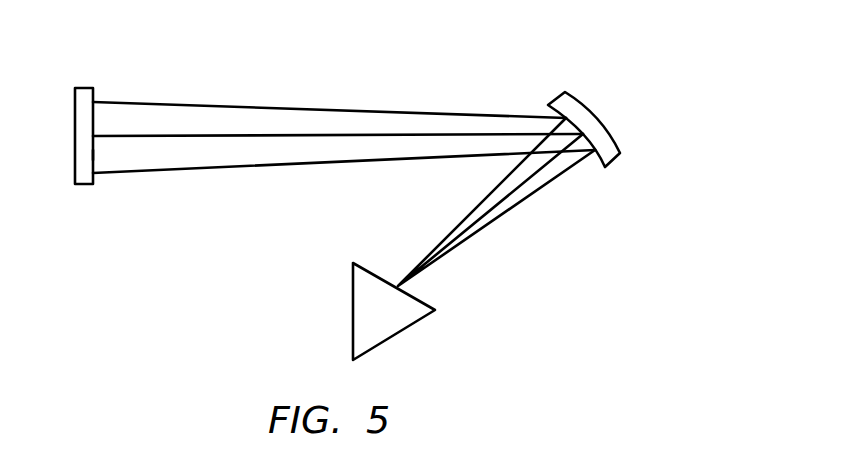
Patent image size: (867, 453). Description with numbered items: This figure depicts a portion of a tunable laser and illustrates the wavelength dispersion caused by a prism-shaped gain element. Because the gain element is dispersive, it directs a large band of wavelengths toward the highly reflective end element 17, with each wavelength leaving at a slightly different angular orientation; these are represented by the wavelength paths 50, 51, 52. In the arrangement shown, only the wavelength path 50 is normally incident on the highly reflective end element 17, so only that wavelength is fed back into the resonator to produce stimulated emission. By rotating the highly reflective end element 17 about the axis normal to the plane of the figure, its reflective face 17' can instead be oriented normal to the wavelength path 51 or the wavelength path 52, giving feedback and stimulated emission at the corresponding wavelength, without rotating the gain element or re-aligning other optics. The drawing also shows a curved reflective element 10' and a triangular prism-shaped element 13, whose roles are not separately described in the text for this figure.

The highly reflective end element 17 is at (103, 112).
The reflective face 17' is at (131, 191).
The wavelength path 52 is at (294, 108).
The wavelength path 50 is at (273, 135).
The wavelength path 51 is at (252, 165).
The concave mirror 10' is at (584, 111).
The prism 13 is at (362, 265).